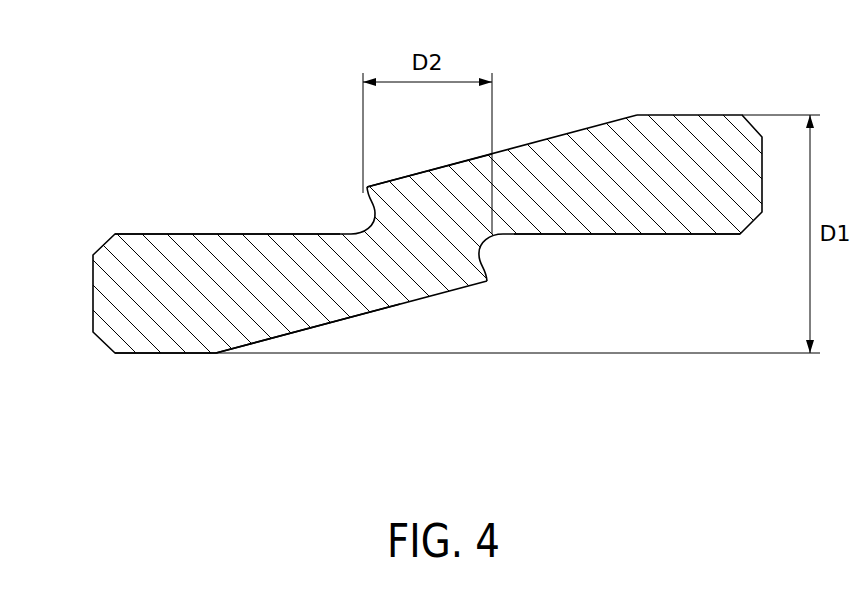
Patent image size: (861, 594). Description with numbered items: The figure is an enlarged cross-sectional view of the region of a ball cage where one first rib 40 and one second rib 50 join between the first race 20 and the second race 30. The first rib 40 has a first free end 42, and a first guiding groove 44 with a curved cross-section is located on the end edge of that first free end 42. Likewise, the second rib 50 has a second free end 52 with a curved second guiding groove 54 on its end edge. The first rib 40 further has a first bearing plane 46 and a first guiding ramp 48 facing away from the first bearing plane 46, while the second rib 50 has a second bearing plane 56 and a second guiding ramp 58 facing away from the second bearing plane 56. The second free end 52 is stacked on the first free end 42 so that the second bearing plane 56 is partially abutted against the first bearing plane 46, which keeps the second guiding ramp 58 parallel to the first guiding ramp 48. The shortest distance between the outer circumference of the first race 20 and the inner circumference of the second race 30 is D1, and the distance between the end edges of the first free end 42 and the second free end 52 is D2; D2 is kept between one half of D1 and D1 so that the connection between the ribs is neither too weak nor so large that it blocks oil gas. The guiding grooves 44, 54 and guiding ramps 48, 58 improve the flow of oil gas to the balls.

The first race 20 is at (695, 143).
The second race 30 is at (125, 295).
The first rib 40 is at (597, 150).
The first free end 42 is at (407, 185).
The first guiding groove 44 is at (365, 212).
The first bearing plane 46 is at (604, 236).
The first guiding ramp 48 is at (558, 133).
The second rib 50 is at (335, 308).
The second free end 52 is at (455, 283).
The second guiding groove 54 is at (491, 262).
The second bearing plane 56 is at (232, 233).
The second guiding ramp 58 is at (267, 342).